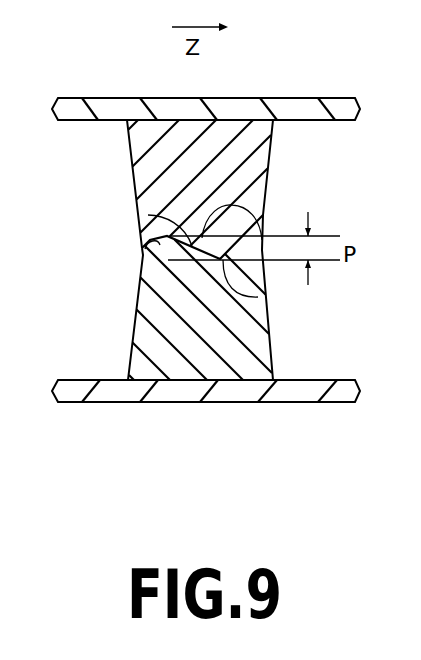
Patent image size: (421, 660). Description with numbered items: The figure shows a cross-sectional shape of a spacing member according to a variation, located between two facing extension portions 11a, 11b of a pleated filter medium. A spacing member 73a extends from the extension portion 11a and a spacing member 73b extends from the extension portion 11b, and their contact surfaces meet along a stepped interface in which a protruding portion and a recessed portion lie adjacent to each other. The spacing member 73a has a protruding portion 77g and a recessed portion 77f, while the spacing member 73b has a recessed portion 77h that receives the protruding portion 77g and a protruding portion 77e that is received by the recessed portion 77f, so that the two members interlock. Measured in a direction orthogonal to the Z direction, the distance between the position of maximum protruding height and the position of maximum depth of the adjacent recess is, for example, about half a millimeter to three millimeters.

The extension portion 11a is at (112, 108).
The extension portion 11b is at (132, 395).
The spacing member 73a is at (165, 146).
The spacing member 73b is at (155, 301).
The protruding portion 77e is at (148, 215).
The recessed portion 77f is at (143, 247).
The protruding portion 77g is at (258, 297).
The recessed portion 77h is at (233, 205).